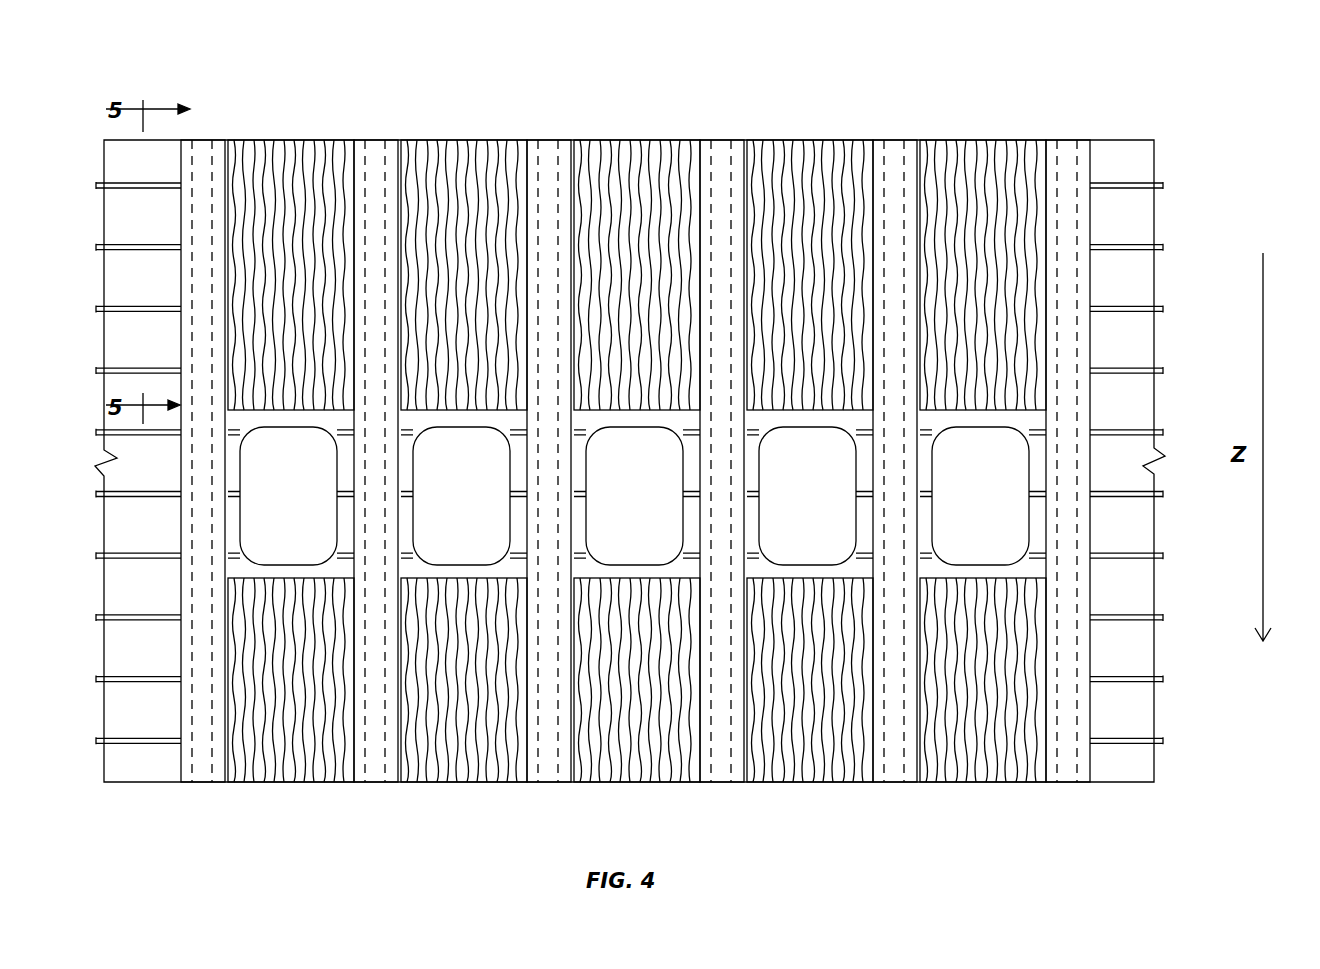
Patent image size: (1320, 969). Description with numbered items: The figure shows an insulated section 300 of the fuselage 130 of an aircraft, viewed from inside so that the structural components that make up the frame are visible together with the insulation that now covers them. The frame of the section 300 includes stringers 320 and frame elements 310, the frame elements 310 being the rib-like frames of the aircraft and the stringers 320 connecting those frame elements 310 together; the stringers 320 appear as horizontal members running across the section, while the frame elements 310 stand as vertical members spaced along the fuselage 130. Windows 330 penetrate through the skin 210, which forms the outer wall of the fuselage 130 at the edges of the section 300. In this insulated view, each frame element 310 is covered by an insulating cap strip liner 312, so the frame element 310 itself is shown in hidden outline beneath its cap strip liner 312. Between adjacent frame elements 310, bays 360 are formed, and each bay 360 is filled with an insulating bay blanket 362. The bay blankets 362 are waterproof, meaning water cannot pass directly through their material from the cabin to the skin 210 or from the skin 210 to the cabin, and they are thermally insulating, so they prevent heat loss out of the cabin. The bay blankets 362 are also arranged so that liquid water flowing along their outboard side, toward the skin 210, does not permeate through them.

The section 300 is at (1160, 50).
The frame element 310 is at (210, 168).
The insulating cap strip liner 312 is at (216, 156).
The bay blanket 362 is at (306, 160).
The bay 360 is at (354, 810).
The window 330 is at (285, 496).
The stringer 320 is at (130, 186).
The skin 210 is at (1124, 156).
The fuselage 130 is at (1211, 796).